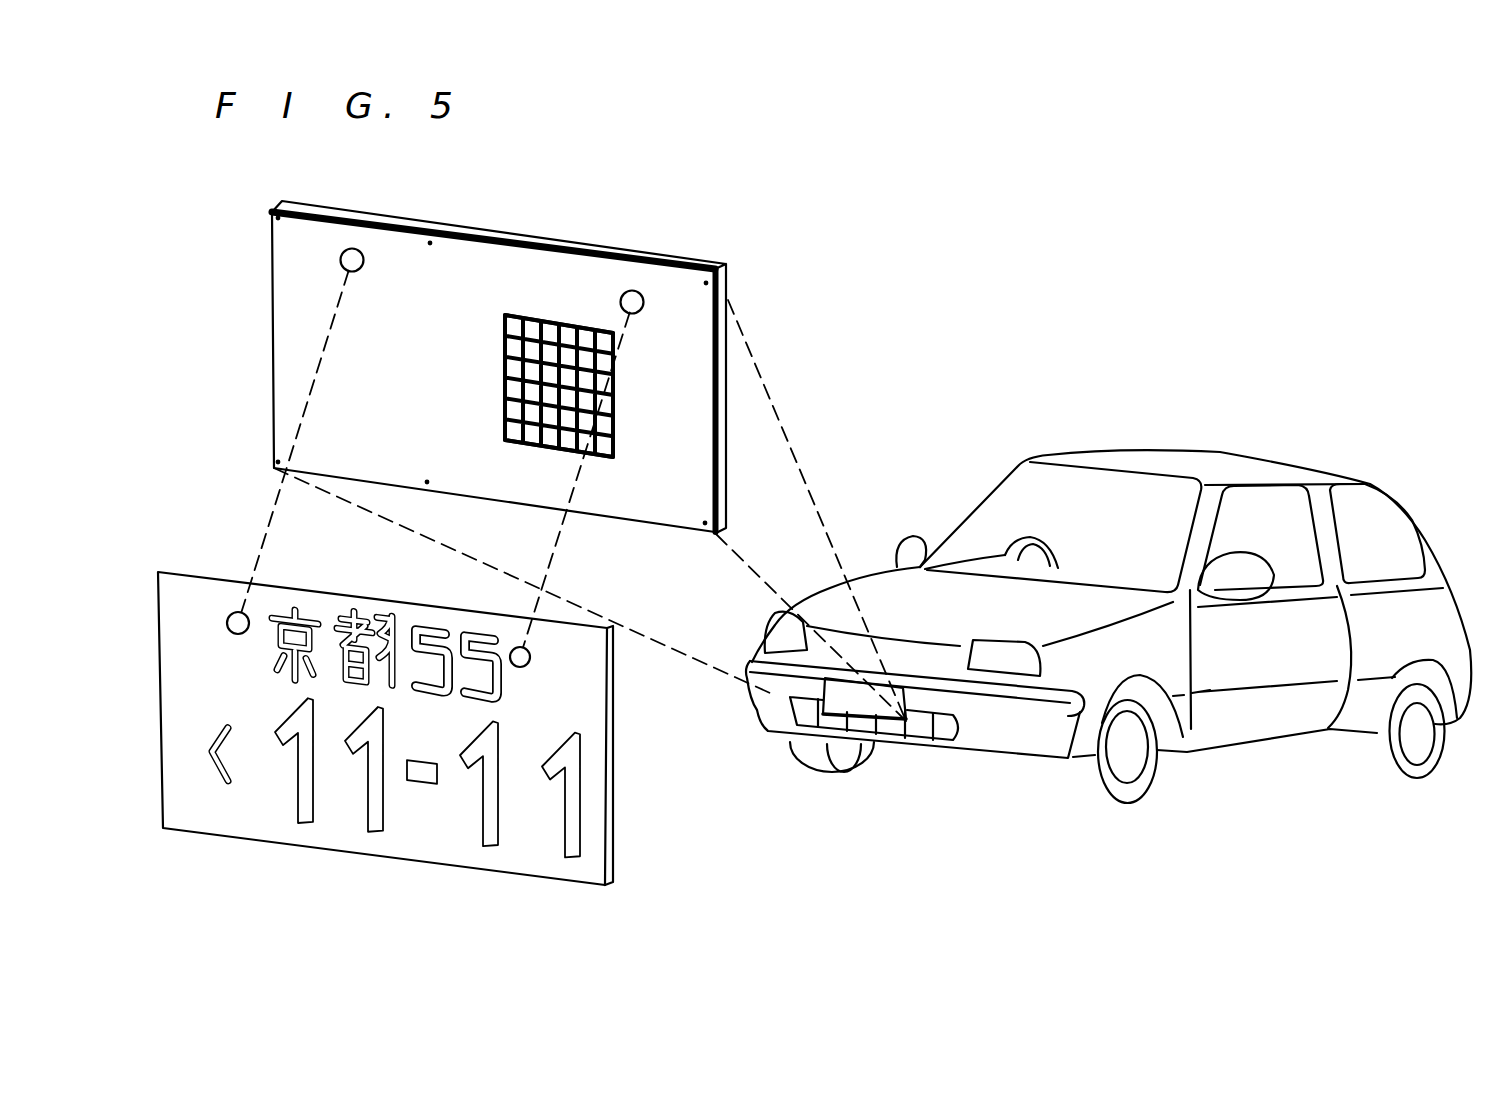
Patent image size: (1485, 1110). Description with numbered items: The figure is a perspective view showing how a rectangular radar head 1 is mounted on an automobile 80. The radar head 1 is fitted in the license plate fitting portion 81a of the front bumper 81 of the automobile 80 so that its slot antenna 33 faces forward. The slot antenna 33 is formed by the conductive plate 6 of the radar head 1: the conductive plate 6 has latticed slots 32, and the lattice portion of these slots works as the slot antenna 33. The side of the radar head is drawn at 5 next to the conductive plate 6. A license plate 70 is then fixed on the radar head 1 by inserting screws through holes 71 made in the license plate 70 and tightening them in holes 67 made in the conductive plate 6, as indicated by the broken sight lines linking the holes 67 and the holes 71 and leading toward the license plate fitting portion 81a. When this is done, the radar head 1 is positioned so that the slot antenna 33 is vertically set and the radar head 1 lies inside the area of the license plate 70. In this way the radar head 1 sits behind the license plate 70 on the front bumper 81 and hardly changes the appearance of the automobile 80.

The radar head 1 is at (452, 224).
The side frame of display device 5 is at (728, 280).
The conductive plate 6 is at (283, 338).
The holes 67 is at (343, 268).
The latticed slots 32 is at (613, 418).
The slot antenna 33 is at (631, 383).
The license plate 70 is at (193, 580).
The holes 71 is at (236, 634).
The automobile 80 is at (1161, 452).
The front bumper 81 is at (1007, 702).
The license plate fitting portion 81a is at (867, 703).